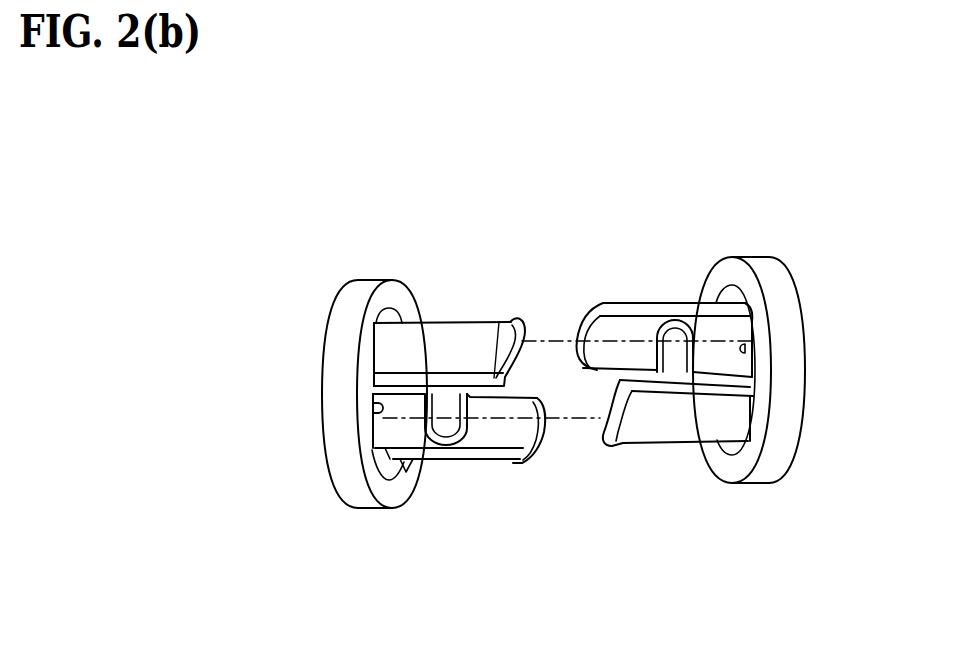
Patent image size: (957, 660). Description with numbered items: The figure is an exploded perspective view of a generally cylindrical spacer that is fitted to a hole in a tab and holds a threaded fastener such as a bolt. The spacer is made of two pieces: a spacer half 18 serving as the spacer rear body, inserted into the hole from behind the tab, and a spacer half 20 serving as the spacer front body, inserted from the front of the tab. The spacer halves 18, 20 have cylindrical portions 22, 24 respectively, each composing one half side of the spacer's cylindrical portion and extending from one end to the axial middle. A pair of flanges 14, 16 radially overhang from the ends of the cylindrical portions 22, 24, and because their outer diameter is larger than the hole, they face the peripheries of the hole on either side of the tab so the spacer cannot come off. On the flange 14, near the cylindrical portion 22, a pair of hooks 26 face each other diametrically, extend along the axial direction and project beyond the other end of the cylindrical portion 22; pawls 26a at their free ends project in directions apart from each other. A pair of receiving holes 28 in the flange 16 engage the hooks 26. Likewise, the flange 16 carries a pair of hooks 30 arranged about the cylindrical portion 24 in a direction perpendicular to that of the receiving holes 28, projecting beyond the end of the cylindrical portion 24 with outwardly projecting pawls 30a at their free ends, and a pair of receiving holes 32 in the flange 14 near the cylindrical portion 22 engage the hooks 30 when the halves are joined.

The flange 14 is at (728, 335).
The flange 16 is at (503, 367).
The spacer half 18 is at (767, 242).
The spacer half 20 is at (326, 281).
The cylindrical portion 22 is at (688, 305).
The cylindrical portion 24 is at (441, 465).
The hooks 26 is at (640, 297).
The pawls 26a is at (598, 300).
The receiving holes 28 is at (378, 406).
The hooks 30 is at (433, 333).
The pawls 30a is at (505, 325).
The receiving holes 32 is at (756, 352).